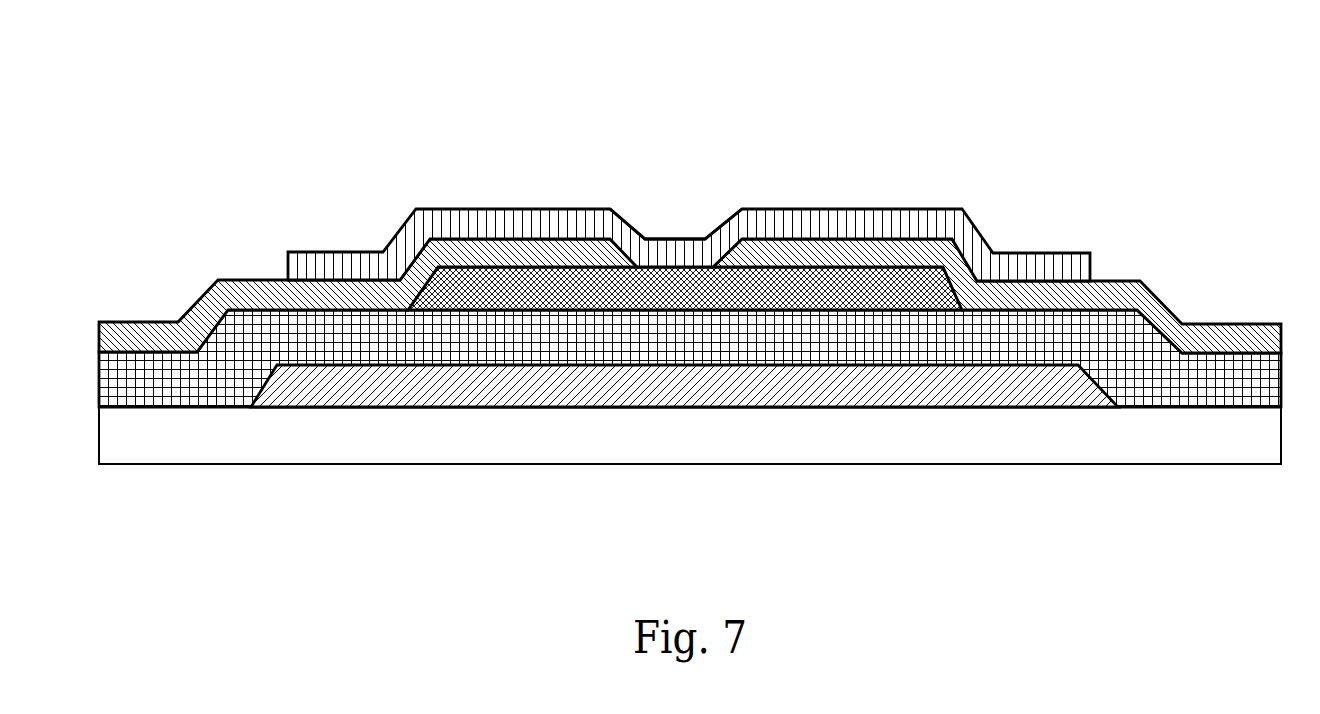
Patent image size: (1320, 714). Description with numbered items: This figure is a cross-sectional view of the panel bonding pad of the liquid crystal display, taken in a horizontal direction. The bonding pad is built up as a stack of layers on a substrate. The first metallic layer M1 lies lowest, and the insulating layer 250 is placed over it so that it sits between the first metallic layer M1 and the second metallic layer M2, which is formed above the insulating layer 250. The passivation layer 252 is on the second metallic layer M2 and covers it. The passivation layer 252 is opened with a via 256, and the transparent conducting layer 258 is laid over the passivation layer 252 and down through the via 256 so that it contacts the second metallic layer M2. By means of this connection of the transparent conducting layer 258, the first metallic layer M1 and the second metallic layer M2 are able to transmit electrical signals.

The insulating layer 250 is at (215, 367).
The first metallic layer M1 is at (533, 378).
The second metallic layer M2 is at (567, 290).
The passivation layer 252 is at (1112, 293).
The via 256 is at (679, 215).
The transparent conducting layer 258 is at (763, 220).